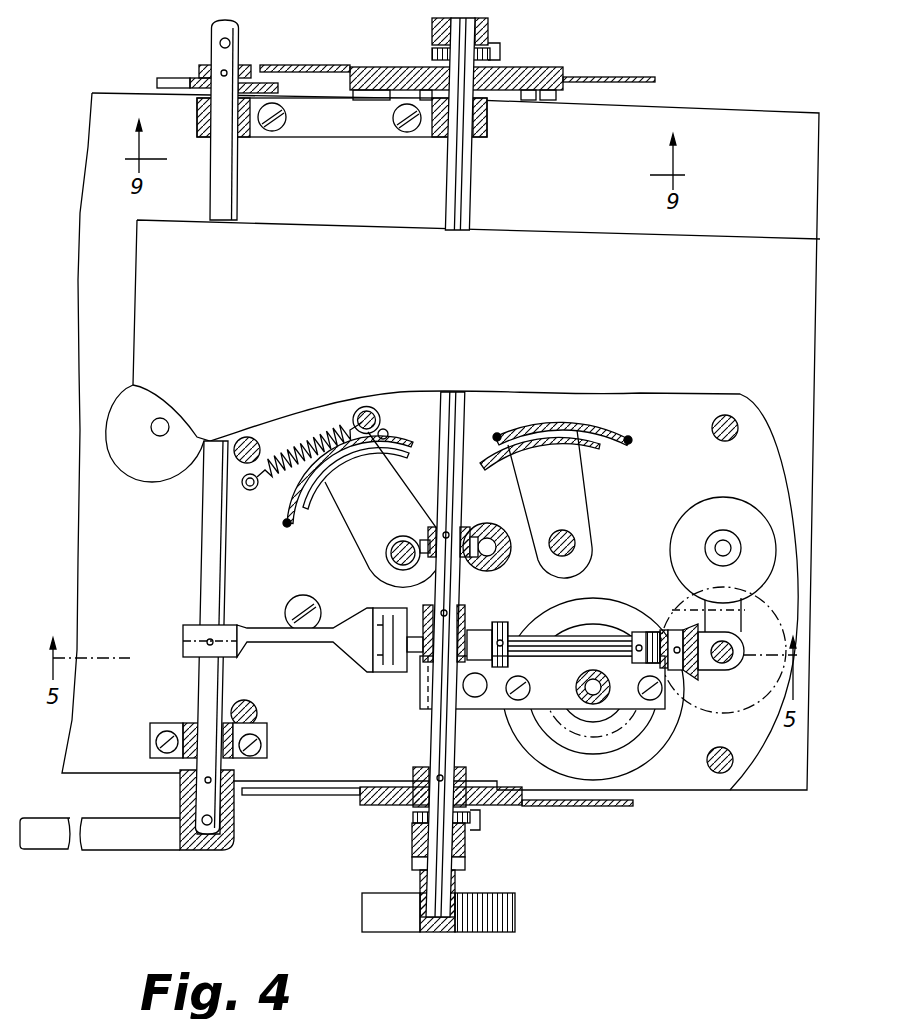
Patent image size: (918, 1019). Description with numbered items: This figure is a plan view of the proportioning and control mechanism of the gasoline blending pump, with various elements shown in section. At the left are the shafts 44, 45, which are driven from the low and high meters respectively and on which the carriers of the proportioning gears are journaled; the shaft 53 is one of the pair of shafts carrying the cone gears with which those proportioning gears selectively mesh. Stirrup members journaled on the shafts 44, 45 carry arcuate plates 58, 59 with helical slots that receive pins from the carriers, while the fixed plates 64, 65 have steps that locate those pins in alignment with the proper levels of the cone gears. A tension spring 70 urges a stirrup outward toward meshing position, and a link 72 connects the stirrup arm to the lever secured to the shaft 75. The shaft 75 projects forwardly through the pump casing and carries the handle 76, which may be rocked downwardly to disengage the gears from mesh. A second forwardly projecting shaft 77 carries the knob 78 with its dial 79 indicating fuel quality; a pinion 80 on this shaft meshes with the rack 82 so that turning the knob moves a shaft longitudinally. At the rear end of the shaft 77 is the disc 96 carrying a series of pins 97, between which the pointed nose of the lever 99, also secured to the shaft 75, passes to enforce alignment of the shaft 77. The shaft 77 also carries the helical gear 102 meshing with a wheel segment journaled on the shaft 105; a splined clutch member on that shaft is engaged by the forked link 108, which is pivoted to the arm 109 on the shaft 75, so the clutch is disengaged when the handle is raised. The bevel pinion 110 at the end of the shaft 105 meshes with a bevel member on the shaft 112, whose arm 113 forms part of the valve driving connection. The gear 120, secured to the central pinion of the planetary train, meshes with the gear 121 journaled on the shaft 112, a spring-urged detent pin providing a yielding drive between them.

The shaft 44 is at (402, 540).
The shaft 45 is at (575, 540).
The shaft 53 is at (588, 695).
The arcuate plate 58 is at (393, 447).
The arcuate plate 59 is at (593, 442).
The fixed plate 64 is at (388, 436).
The fixed plate 65 is at (588, 420).
The tension spring 70 is at (297, 462).
The link 72 is at (318, 415).
The shaft 75 is at (212, 695).
The handle 76 is at (132, 838).
The shaft 77 is at (470, 212).
The knob 78 is at (500, 918).
The dial 79 is at (568, 806).
The pinion 80 is at (467, 523).
The rack 82 is at (464, 564).
The disc 96 is at (515, 70).
The pins 97 is at (548, 100).
The lever 99 is at (265, 88).
The helical gear 102 is at (467, 618).
The shaft 105 is at (597, 643).
The link 108 is at (290, 640).
The arm 109 is at (187, 645).
The bevel pinion 110 is at (687, 630).
The shaft 112 is at (722, 662).
The arm 113 is at (725, 623).
The gear 120 is at (630, 730).
The gear 121 is at (760, 697).